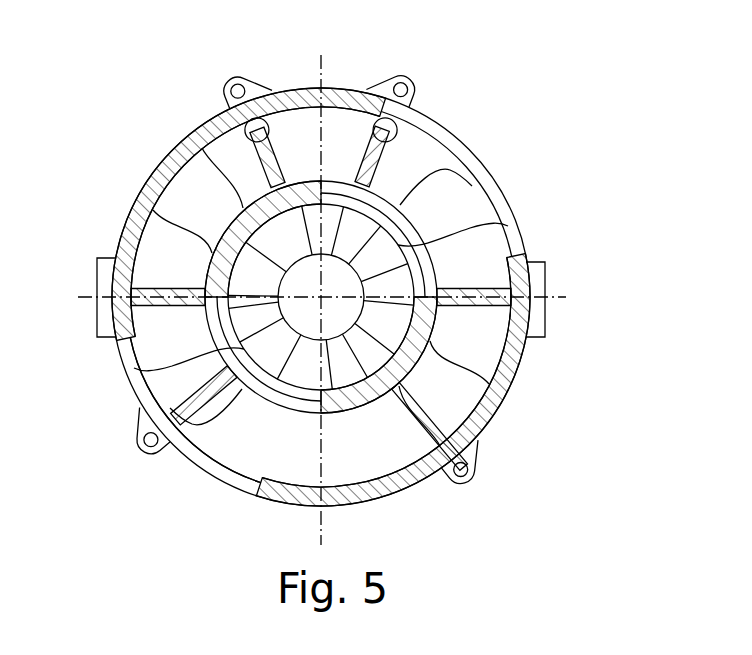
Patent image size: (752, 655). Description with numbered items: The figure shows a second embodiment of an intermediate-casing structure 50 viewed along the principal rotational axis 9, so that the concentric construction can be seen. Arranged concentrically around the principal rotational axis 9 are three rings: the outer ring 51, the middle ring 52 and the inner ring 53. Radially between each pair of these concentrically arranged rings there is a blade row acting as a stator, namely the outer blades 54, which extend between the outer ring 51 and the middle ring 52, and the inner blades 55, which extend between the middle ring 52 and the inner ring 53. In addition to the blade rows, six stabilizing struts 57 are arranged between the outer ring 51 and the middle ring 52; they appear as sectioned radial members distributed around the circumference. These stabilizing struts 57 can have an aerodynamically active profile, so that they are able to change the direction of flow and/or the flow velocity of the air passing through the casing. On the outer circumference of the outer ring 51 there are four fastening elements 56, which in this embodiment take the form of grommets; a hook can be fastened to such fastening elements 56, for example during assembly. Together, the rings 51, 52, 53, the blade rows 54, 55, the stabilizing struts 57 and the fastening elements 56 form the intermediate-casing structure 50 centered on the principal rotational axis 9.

The intermediate-casing structure 50 is at (500, 72).
The outer ring 51 is at (178, 140).
The middle ring 52 is at (195, 328).
The inner ring 53 is at (195, 476).
The outer blades 54 is at (430, 186).
The inner blades 55 is at (282, 342).
The fastening elements 56 is at (230, 82).
The stabilizing struts 57 is at (284, 120).
The principal rotational axis 9 is at (324, 302).